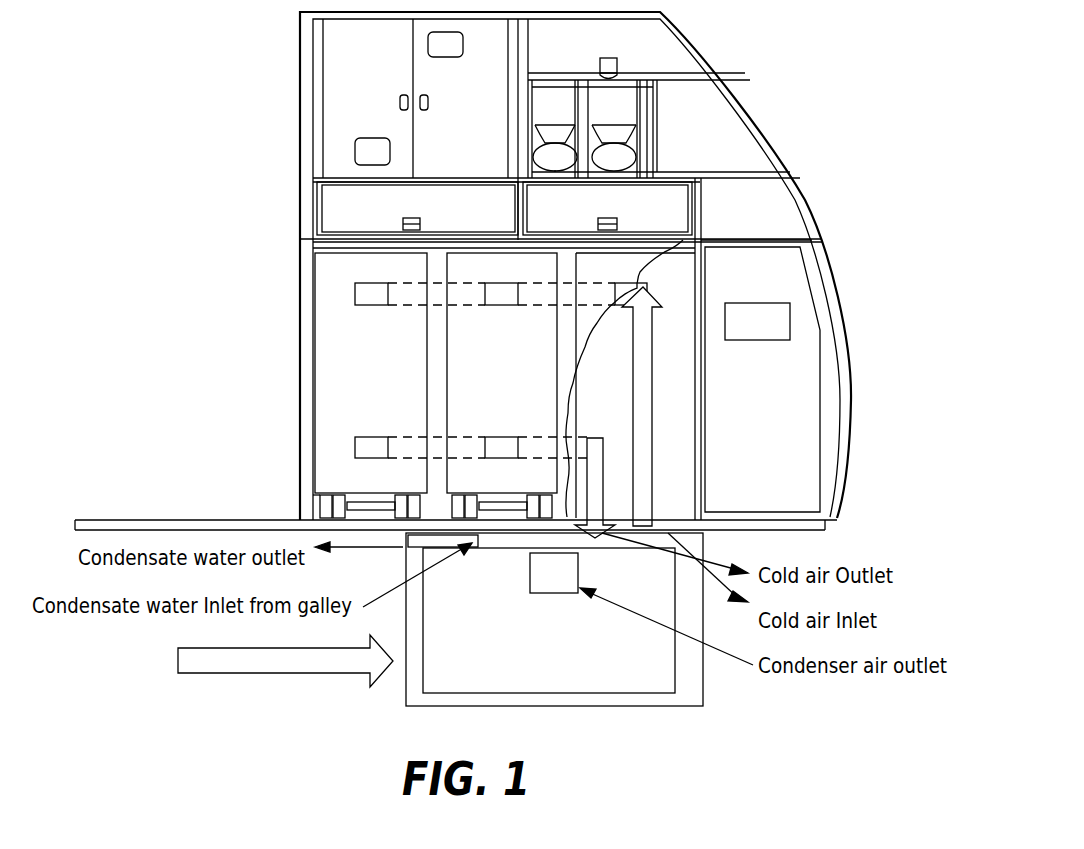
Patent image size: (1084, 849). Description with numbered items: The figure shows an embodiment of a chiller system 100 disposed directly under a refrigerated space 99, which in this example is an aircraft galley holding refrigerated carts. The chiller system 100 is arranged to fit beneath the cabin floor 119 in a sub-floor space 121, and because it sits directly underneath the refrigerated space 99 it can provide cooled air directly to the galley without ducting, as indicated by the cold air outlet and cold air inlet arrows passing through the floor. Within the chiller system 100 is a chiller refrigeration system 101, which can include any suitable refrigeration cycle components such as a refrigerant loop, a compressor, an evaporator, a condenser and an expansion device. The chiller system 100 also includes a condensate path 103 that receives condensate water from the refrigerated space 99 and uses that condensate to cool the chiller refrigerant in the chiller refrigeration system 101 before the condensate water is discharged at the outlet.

The refrigerated space 99 is at (300, 337).
The cabin floor 119 is at (238, 519).
The chiller system 100 is at (569, 635).
The chiller refrigeration system 101 is at (570, 659).
The condensate path 103 is at (428, 540).
The sub-floor space 121 is at (133, 659).